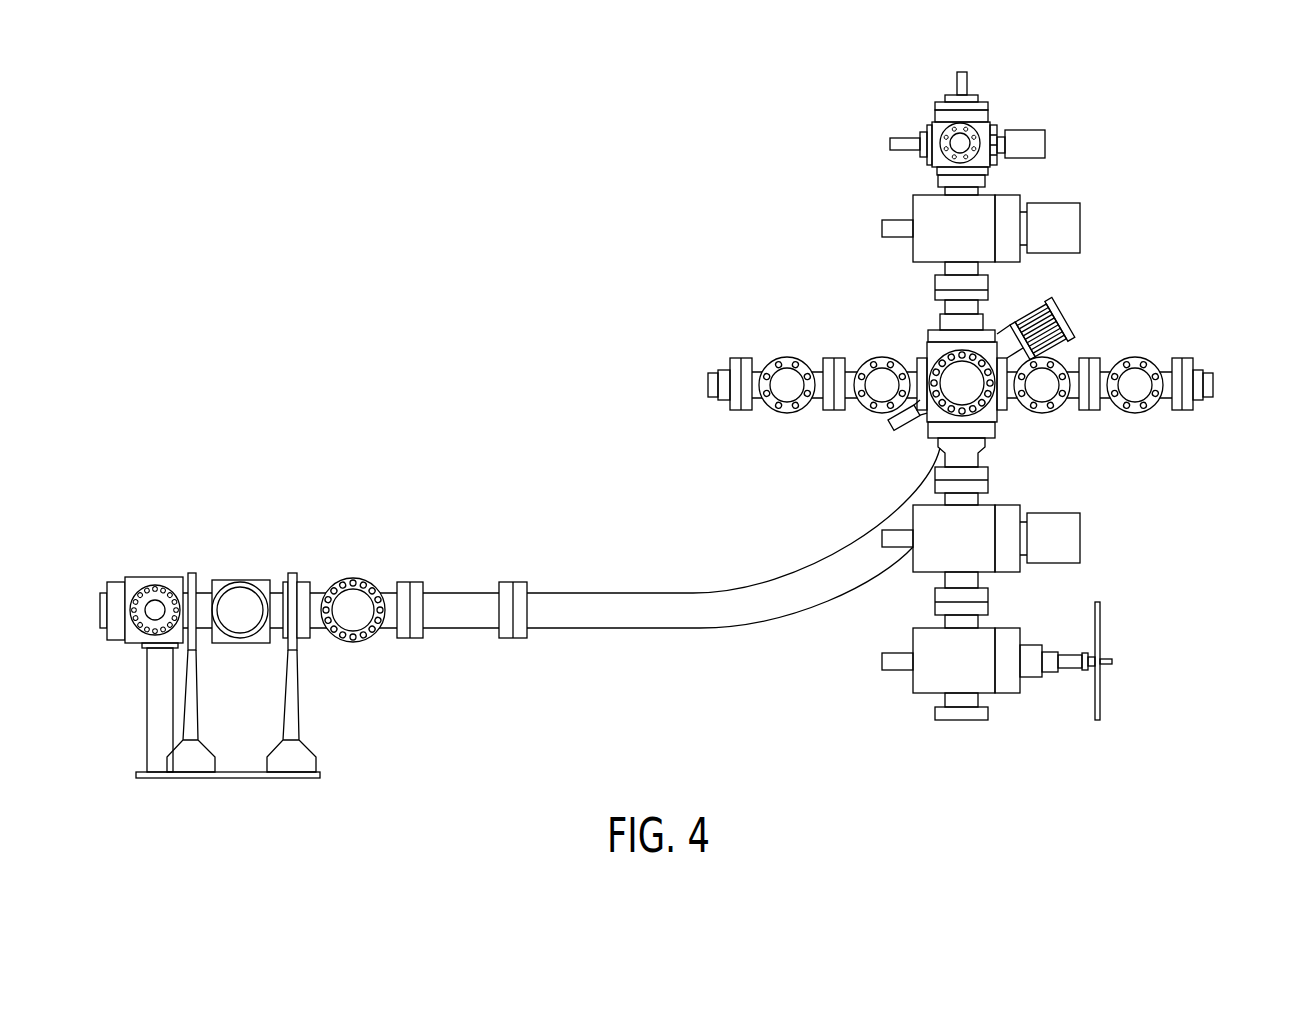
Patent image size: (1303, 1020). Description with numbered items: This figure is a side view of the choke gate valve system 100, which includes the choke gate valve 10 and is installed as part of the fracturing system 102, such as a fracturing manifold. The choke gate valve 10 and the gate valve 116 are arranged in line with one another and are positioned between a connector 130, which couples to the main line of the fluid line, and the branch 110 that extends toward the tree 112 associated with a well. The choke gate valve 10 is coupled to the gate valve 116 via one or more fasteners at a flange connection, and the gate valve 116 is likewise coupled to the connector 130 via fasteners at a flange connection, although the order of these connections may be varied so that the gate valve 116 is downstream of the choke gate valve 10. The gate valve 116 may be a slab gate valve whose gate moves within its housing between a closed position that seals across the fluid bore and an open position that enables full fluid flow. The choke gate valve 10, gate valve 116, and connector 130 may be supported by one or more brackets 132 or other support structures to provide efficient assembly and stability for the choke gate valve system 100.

The choke gate valve 10 is at (365, 667).
The choke gate valve system 100 is at (518, 490).
The fracturing system 102 is at (1198, 265).
The branch 110 is at (693, 592).
The tree 112 is at (1123, 203).
The gate valve 116 is at (240, 652).
The connector 130 is at (112, 568).
The brackets 132 is at (298, 767).